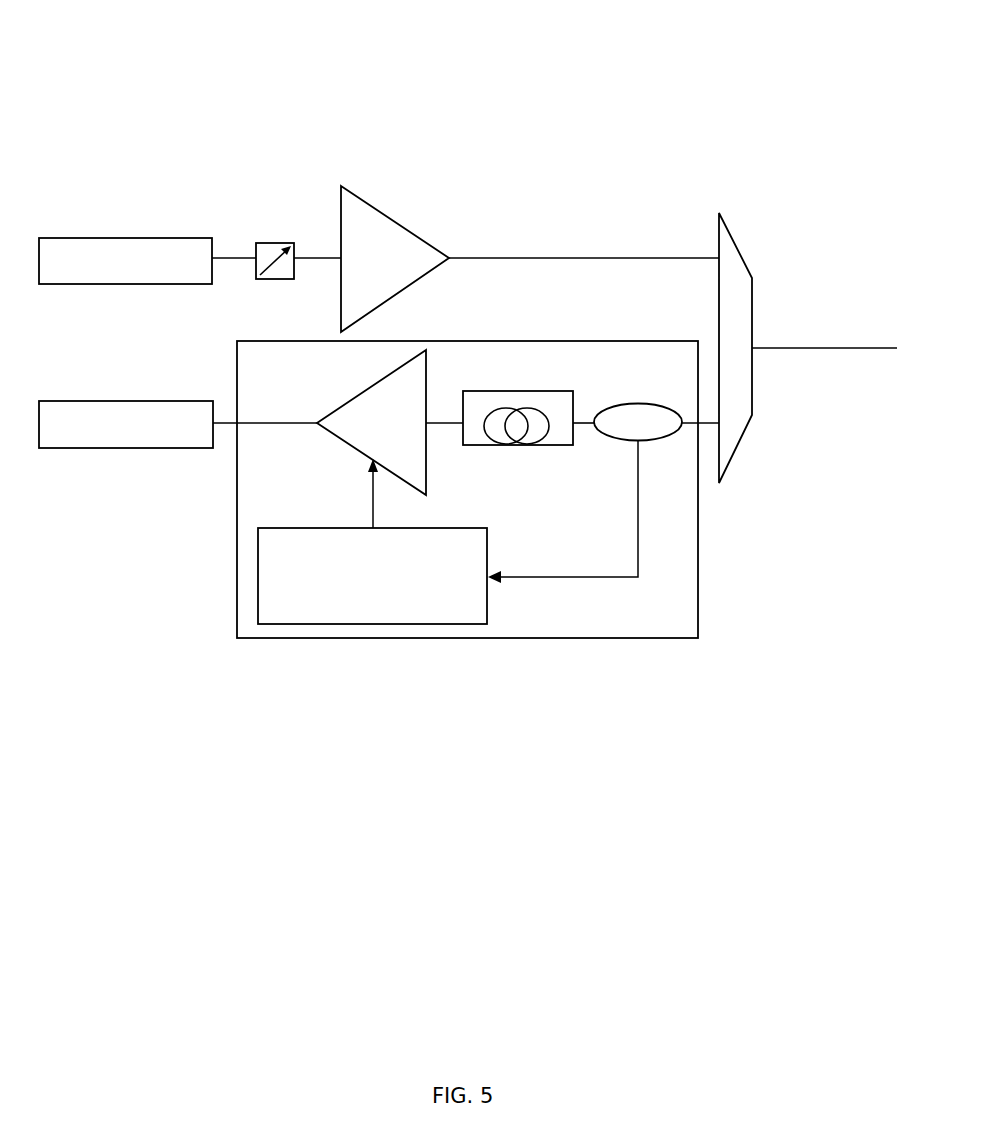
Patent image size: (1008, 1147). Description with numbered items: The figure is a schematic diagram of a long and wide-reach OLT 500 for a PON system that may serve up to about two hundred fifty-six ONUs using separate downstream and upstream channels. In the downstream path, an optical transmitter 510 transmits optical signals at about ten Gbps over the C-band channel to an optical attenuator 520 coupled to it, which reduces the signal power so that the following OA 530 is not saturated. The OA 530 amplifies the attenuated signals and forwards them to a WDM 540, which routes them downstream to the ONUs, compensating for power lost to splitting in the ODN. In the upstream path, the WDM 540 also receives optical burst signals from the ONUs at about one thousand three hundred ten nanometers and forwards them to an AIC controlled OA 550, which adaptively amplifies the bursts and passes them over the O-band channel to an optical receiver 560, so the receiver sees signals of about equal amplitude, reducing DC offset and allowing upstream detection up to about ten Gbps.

The OLT 500 is at (208, 82).
The optical transmitter 510 is at (118, 237).
The optical attenuator 520 is at (267, 242).
The OA 530 is at (387, 215).
The WDM 540 is at (717, 217).
The AIC controlled OA 550 is at (237, 588).
The optical receiver 560 is at (128, 398).